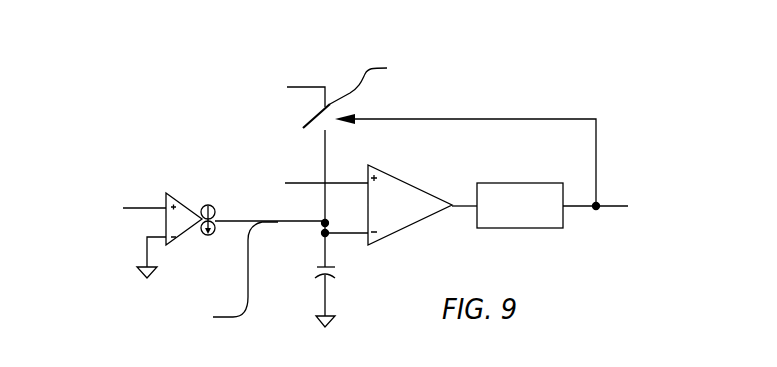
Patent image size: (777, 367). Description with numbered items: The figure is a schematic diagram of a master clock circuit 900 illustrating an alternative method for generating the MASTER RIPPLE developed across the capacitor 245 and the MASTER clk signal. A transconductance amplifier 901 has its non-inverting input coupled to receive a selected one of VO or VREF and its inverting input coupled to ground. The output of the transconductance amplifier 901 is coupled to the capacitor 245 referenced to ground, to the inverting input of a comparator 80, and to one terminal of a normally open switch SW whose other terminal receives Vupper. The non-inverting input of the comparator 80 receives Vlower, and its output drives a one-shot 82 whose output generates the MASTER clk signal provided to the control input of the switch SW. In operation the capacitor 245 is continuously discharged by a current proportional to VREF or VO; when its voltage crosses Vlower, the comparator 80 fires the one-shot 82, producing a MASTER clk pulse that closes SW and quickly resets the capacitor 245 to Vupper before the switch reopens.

The master clock circuit 900 is at (661, 60).
The transconductance amplifier 901 is at (192, 204).
The comparator 80 is at (427, 188).
The one-shot 82 is at (505, 183).
The capacitor 245 is at (310, 294).